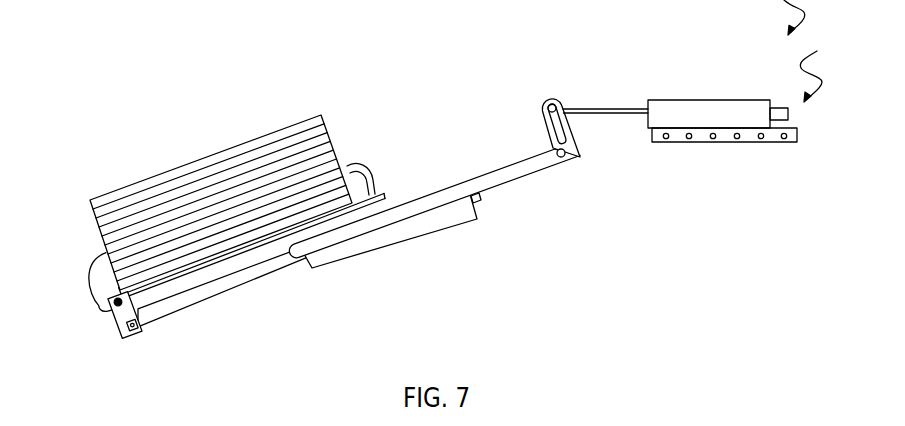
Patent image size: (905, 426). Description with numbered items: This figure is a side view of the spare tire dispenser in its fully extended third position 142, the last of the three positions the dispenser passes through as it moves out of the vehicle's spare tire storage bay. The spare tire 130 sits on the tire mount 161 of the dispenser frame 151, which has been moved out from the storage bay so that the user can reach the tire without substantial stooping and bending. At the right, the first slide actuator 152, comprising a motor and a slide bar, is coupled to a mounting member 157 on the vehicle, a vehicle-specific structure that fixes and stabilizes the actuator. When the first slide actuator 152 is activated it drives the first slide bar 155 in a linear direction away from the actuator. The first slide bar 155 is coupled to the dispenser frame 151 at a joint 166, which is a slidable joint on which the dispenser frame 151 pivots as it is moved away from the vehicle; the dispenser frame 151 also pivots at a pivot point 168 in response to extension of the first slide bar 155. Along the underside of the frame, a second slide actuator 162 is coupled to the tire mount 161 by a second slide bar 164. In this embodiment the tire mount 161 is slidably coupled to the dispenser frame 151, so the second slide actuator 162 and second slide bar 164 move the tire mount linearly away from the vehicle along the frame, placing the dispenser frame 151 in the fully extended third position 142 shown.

The spare tire 130 is at (218, 152).
The third position 142 is at (817, 51).
The dispenser frame 151 is at (521, 176).
The first slide actuator 152 is at (697, 112).
The first slide bar 155 is at (607, 108).
The mounting member 157 is at (773, 143).
The tire mount 161 is at (90, 272).
The second slide actuator 162 is at (440, 228).
The second slide bar 164 is at (225, 291).
The joint 166 is at (543, 107).
The pivot point 168 is at (572, 156).